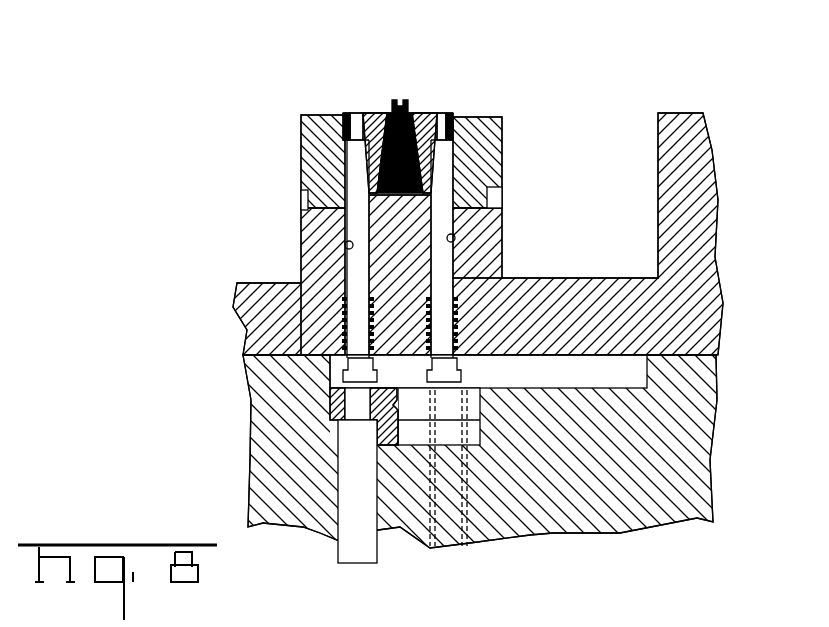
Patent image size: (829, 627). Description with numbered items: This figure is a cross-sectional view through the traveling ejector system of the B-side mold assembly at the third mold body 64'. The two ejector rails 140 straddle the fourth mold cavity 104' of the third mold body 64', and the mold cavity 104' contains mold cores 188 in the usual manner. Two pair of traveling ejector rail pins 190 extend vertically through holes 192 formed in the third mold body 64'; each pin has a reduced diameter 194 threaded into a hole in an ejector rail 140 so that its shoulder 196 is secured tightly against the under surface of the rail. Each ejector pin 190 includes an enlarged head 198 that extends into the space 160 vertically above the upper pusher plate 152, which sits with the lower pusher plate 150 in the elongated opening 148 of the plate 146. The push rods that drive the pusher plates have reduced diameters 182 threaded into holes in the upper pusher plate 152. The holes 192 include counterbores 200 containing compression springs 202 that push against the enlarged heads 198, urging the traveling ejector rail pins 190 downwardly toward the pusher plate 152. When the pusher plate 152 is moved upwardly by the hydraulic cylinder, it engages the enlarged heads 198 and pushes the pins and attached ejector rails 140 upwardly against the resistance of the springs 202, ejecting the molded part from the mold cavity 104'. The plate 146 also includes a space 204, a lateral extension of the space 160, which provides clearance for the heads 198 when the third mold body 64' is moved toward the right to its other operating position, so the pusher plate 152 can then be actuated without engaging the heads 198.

The third mold body 64' is at (600, 193).
The fourth mold cavity 104' is at (441, 63).
The ejector rails 140 is at (378, 112).
The plate 146 is at (712, 465).
The elongated opening 148 is at (470, 407).
The pusher plate 150 is at (338, 437).
The pusher plate 152 is at (340, 402).
The space 160 is at (333, 380).
The reduced diameters 182 is at (240, 368).
The mold cores 188 is at (398, 100).
The traveling ejector rail pins 190 is at (357, 157).
The holes 192 is at (350, 236).
The reduced diameters 194 is at (348, 112).
The shoulders 196 is at (355, 117).
The enlarged heads 198 is at (377, 368).
The counterbores 200 is at (343, 303).
The compression springs 202 is at (340, 332).
The space 204 is at (623, 372).